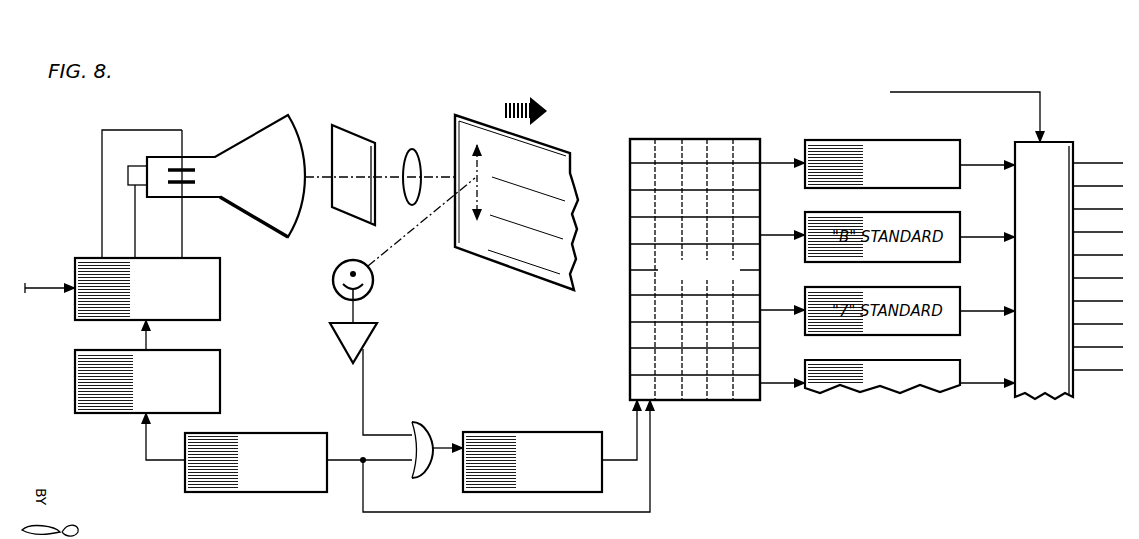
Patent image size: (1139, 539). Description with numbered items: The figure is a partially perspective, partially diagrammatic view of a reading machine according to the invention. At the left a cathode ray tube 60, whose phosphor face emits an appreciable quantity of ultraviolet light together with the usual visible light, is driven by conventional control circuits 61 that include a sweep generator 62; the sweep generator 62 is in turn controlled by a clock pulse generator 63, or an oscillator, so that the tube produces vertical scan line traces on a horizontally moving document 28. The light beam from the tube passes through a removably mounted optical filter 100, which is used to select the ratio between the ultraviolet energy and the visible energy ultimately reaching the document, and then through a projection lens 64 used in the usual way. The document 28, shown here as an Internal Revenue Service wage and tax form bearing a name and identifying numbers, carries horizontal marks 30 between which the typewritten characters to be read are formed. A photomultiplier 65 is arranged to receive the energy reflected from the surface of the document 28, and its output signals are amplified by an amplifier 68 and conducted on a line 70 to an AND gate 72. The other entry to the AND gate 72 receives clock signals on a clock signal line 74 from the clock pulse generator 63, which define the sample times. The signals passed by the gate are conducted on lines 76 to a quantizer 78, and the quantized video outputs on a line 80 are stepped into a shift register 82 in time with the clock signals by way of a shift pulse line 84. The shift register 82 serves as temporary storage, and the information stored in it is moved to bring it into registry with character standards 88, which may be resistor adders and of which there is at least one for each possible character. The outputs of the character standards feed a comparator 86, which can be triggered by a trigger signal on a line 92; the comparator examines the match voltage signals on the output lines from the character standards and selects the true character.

The document 28 is at (530, 273).
The horizontal marks 30 is at (550, 192).
The cathode ray tube 60 is at (240, 142).
The control circuits 61 is at (88, 258).
The sweep generator 62 is at (75, 380).
The clock pulse generator 63 is at (248, 433).
The projection lens 64 is at (413, 149).
The photomultiplier 65 is at (374, 285).
The amplifier 68 is at (374, 335).
The line 70 is at (363, 416).
The AND gate 72 is at (423, 470).
The clock signal line 74 is at (340, 460).
The lines 76 is at (443, 445).
The quantizer 78 is at (517, 432).
The line 80 is at (636, 427).
The shift register 82 is at (685, 139).
The shift pulse line 84 is at (651, 447).
The comparator 86 is at (1074, 142).
The character standards 88 is at (857, 140).
The trigger signal line 92 is at (945, 92).
The optical filter 100 is at (360, 135).